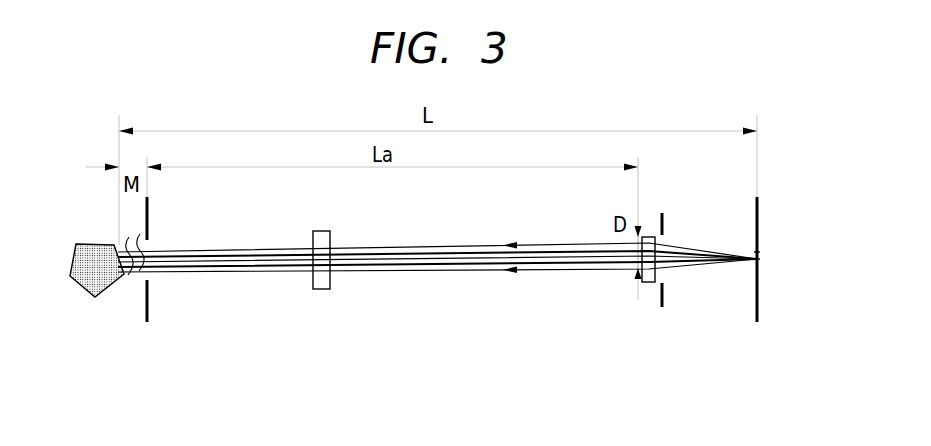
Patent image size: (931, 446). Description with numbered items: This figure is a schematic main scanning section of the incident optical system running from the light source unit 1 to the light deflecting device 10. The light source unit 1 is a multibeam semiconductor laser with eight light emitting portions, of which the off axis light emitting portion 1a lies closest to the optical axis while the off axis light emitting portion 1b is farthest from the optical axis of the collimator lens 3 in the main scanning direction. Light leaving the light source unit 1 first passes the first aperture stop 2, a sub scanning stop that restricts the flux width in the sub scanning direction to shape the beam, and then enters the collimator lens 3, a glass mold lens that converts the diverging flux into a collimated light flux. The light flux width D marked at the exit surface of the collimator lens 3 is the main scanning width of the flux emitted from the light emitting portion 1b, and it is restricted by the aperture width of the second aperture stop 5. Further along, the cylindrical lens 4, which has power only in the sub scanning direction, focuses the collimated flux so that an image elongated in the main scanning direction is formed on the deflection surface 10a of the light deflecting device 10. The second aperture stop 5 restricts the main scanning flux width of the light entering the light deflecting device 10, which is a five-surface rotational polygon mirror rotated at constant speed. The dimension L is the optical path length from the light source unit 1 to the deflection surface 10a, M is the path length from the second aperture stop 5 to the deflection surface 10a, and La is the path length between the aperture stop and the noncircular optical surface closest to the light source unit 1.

The light source unit 1 is at (759, 299).
The off axis light emitting portion 1a is at (759, 261).
The off axis light emitting portion 1b is at (759, 256).
The first aperture stop 2 is at (663, 297).
The collimator lens 3 is at (646, 283).
The cylindrical lens 4 is at (319, 289).
The second aperture stop 5 is at (148, 296).
The light deflecting device 10 is at (80, 290).
The deflection surface 10a is at (127, 278).